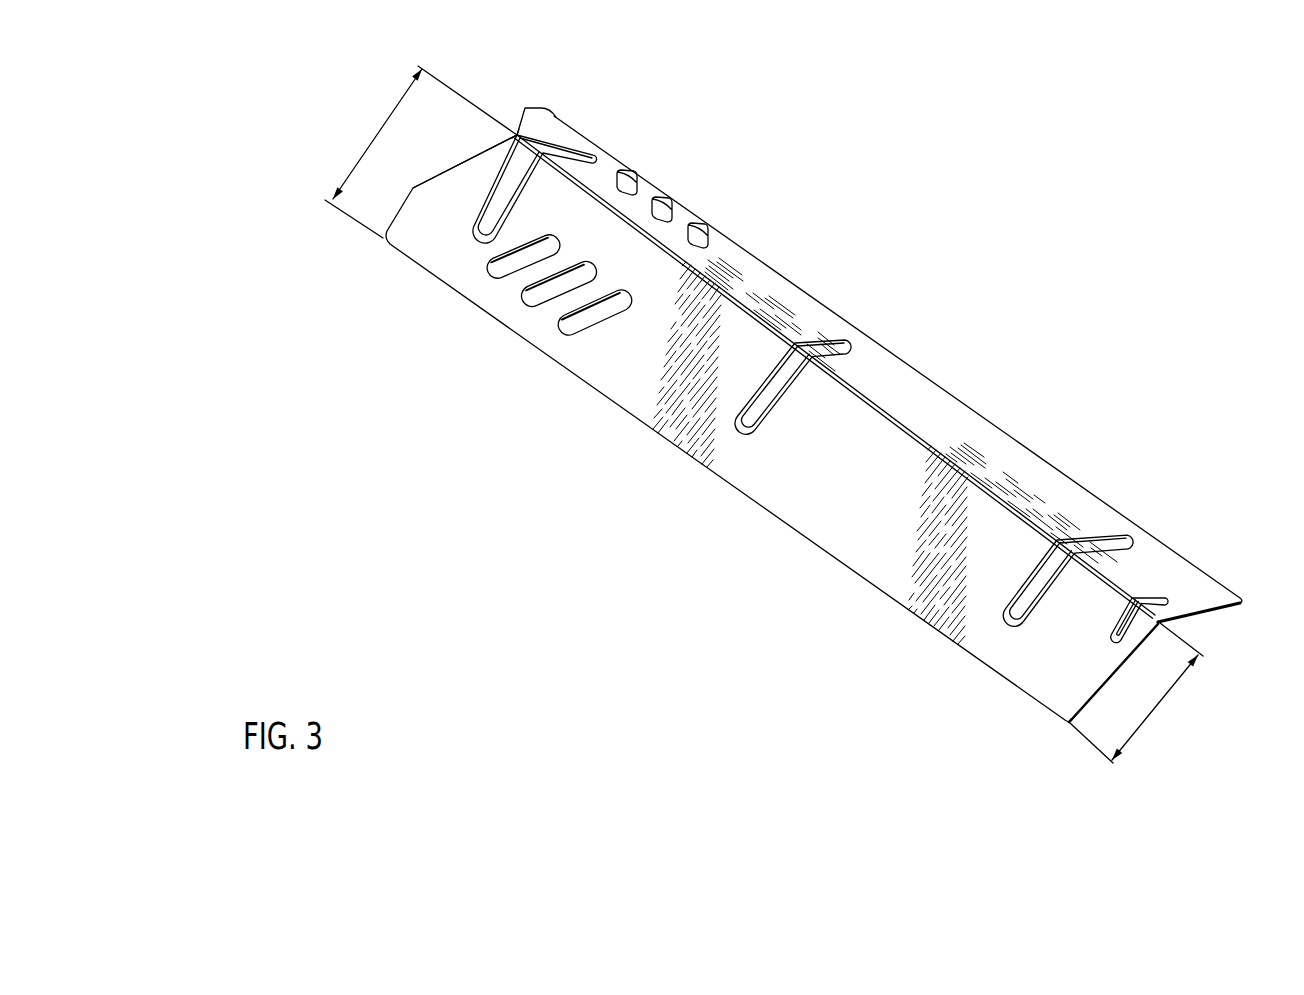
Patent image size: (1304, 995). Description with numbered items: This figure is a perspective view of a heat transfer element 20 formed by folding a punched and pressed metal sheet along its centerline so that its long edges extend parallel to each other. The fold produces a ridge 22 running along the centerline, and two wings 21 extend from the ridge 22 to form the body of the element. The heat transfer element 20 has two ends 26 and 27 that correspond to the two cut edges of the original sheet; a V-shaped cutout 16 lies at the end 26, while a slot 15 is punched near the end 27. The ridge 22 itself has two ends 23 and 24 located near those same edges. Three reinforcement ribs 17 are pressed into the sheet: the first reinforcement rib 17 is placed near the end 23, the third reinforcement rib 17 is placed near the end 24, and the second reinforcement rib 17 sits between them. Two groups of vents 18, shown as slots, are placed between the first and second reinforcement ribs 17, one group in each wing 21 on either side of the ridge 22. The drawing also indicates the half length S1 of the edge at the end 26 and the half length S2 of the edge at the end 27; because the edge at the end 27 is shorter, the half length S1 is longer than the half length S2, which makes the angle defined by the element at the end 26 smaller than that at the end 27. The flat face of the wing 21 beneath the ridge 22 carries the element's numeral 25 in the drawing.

The slot 15 is at (1112, 628).
The V-shaped cutout 16 is at (485, 150).
The reinforcement rib 17 is at (558, 148).
The vents 18 is at (700, 233).
The heat transfer element 20 is at (903, 320).
The wings 21 is at (965, 430).
The ridge 22 is at (1113, 585).
The end of the ridge 23 is at (517, 133).
The end of the ridge 24 is at (1167, 624).
The bottom plate 25 is at (623, 411).
The end of the heat transfer element 26 is at (543, 108).
The end of the heat transfer element 27 is at (1243, 604).
The half length of the edge S1 is at (421, 152).
The half length of the edge S2 is at (1136, 693).